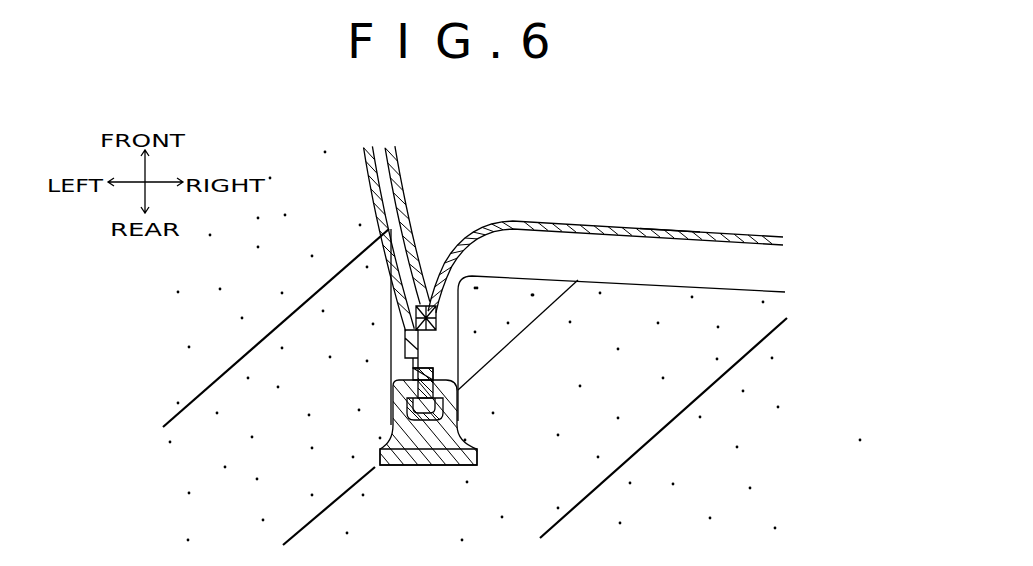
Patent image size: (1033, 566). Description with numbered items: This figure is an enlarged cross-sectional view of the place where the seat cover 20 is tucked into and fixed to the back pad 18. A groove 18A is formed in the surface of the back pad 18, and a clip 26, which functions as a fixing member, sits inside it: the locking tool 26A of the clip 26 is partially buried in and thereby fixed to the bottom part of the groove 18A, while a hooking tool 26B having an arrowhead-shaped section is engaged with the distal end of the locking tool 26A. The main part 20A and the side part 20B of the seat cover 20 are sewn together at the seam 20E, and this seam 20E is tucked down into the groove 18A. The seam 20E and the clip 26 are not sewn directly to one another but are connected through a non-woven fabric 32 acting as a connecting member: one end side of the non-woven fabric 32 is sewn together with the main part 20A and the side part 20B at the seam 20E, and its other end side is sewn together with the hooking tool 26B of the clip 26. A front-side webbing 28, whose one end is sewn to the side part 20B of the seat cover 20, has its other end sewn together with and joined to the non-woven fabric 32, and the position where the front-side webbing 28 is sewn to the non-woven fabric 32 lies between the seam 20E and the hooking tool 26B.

The back pad 18 is at (717, 290).
The groove 18A is at (462, 316).
The seat cover 20 is at (597, 226).
The main part 20A is at (658, 229).
The side part 20B is at (406, 188).
The seam 20E is at (448, 315).
The clip 26 is at (463, 428).
The locking tool 26A is at (427, 465).
The hooking tool 26B is at (447, 380).
The front-side webbing 28 is at (396, 237).
The non-woven fabric 32 is at (434, 358).